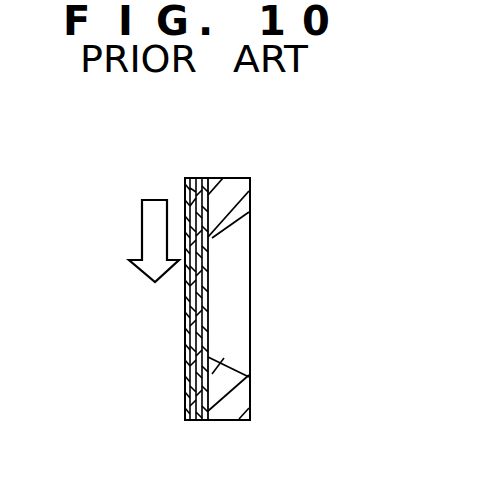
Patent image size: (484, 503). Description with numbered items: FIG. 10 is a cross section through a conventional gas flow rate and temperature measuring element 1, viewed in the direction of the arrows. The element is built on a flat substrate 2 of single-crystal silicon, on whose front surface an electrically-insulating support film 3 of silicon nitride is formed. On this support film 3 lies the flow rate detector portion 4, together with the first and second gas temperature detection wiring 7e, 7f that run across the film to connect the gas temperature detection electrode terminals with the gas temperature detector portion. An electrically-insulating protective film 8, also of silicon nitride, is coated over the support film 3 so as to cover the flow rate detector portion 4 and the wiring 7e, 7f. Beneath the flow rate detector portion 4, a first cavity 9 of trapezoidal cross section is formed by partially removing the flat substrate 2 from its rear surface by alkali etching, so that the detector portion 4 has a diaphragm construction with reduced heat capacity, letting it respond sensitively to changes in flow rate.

The gas flow rate and temperature measuring element 1 is at (317, 177).
The flat substrate 2 is at (250, 398).
The electrically-insulating support film 3 is at (205, 420).
The flow rate detector portion 4 is at (185, 324).
The first gas temperature detection wiring 7e is at (183, 181).
The second gas temperature detection wiring 7f is at (185, 384).
The electrically-insulating protective film 8 is at (186, 420).
The first cavity 9 is at (250, 354).